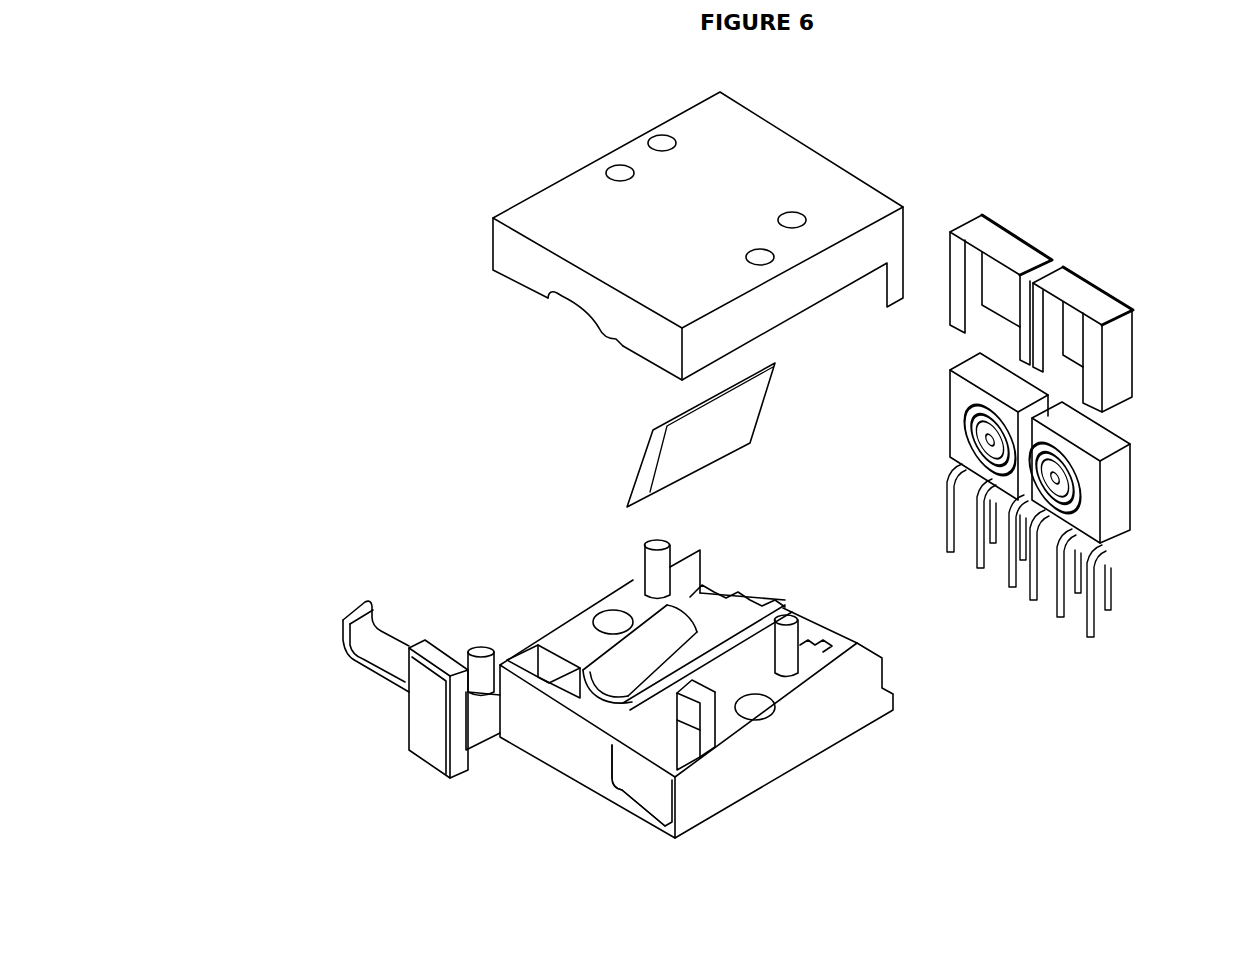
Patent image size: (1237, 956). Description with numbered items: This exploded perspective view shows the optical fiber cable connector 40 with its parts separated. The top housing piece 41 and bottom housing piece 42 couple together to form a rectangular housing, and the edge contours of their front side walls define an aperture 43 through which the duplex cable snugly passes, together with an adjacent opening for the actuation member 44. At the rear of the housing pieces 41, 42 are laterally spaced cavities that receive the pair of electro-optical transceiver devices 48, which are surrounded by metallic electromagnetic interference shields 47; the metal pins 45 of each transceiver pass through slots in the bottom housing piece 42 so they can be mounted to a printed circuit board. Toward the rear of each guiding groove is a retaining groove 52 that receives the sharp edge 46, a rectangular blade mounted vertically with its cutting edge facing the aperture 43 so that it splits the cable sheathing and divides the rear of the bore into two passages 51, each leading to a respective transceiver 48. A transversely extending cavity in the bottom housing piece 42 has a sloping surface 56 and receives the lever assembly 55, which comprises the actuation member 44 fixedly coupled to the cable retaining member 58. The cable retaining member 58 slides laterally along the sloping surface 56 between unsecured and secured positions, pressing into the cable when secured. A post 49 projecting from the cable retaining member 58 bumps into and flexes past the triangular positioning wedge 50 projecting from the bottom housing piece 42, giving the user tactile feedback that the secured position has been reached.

The connector 40 is at (198, 106).
The top housing piece 41 is at (562, 208).
The bottom housing piece 42 is at (757, 763).
The aperture 43 is at (578, 310).
The actuation member 44 is at (425, 723).
The metal pins 45 is at (1043, 580).
The sharp edge 46 is at (695, 443).
The electromagnetic interference shields 47 is at (1077, 283).
The electro-optical transceiver devices 48 is at (962, 397).
The post 49 is at (475, 645).
The positioning wedge 50 is at (692, 710).
The passages 51 is at (640, 642).
The retaining groove 52 is at (770, 595).
The lever assembly 55 is at (342, 594).
The sloping surface 56 is at (650, 783).
The cable retaining member 58 is at (392, 657).